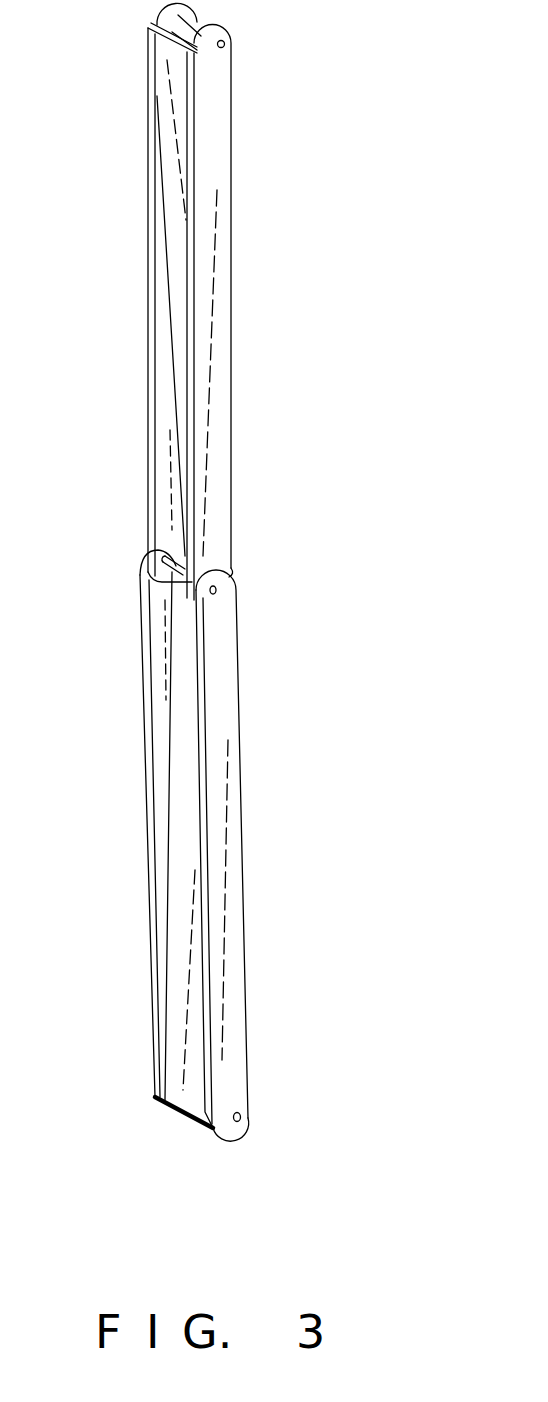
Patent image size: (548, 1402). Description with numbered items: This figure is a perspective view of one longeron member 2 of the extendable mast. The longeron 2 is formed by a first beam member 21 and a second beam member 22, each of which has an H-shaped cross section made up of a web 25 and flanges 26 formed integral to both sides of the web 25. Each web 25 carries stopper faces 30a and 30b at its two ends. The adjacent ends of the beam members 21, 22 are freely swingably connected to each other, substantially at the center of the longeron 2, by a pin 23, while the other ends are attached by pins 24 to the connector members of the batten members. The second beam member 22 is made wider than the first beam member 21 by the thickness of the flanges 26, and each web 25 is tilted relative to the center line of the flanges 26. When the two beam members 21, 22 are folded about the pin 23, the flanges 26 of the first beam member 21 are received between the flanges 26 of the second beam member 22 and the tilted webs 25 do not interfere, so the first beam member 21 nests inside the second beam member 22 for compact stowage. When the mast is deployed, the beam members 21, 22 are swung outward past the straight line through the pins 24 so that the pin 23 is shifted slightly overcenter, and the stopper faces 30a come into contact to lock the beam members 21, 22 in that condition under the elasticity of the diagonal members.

The longeron member 2 is at (208, 595).
The first beam member 21 is at (232, 370).
The second beam member 22 is at (245, 875).
The pin 23 is at (218, 592).
The pin 24 is at (224, 44).
The web 25 is at (178, 157).
The flange 26 is at (220, 238).
The stopper face 30a is at (226, 573).
The stopper face 30b is at (155, 27).